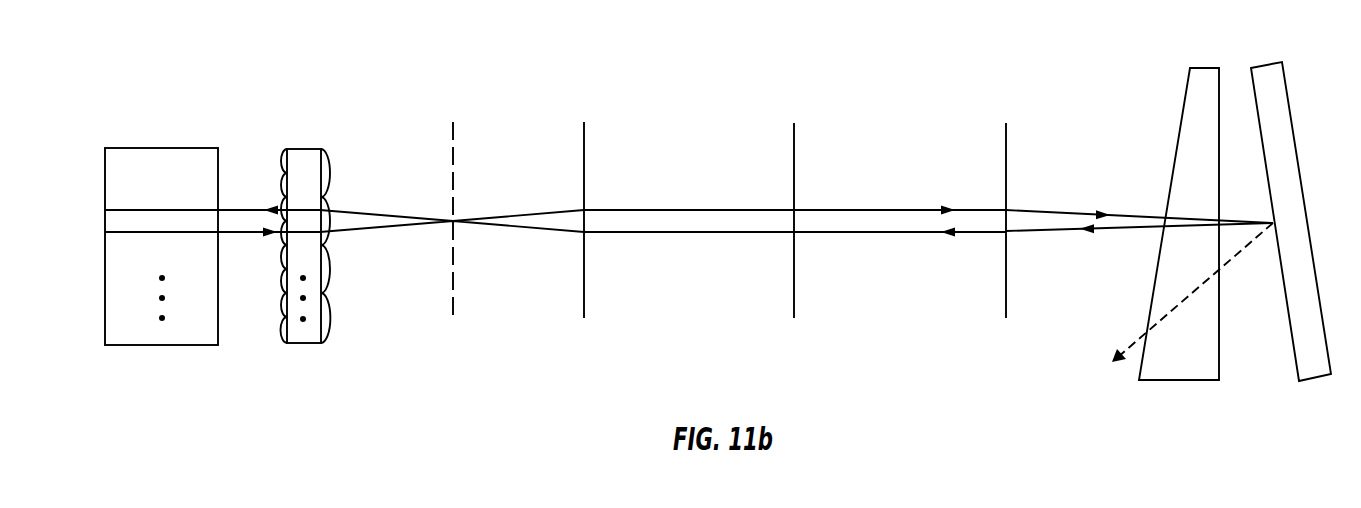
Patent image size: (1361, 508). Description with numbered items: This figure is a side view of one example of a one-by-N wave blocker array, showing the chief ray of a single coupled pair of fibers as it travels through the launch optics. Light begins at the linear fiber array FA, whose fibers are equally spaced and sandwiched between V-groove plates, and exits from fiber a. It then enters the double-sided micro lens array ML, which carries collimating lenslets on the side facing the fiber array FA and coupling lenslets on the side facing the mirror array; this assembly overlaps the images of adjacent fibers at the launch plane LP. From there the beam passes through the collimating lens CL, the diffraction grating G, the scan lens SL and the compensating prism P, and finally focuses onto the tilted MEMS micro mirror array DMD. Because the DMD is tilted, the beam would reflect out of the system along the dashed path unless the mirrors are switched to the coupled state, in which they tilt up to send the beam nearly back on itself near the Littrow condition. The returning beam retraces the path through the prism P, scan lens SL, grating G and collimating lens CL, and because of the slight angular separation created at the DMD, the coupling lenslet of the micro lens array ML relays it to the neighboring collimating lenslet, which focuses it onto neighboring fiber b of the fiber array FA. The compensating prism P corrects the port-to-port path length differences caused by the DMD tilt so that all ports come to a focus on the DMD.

The fiber array FA is at (161, 223).
The fiber A a is at (212, 242).
The fiber B b is at (212, 196).
The micro lens array ML is at (306, 222).
The launch plane LP is at (454, 196).
The collimating lens CL is at (585, 196).
The diffraction grating G is at (795, 195).
The scan lens SL is at (1006, 195).
The compensating prism P is at (1179, 197).
The MEMS micro mirror array DMD is at (1286, 194).